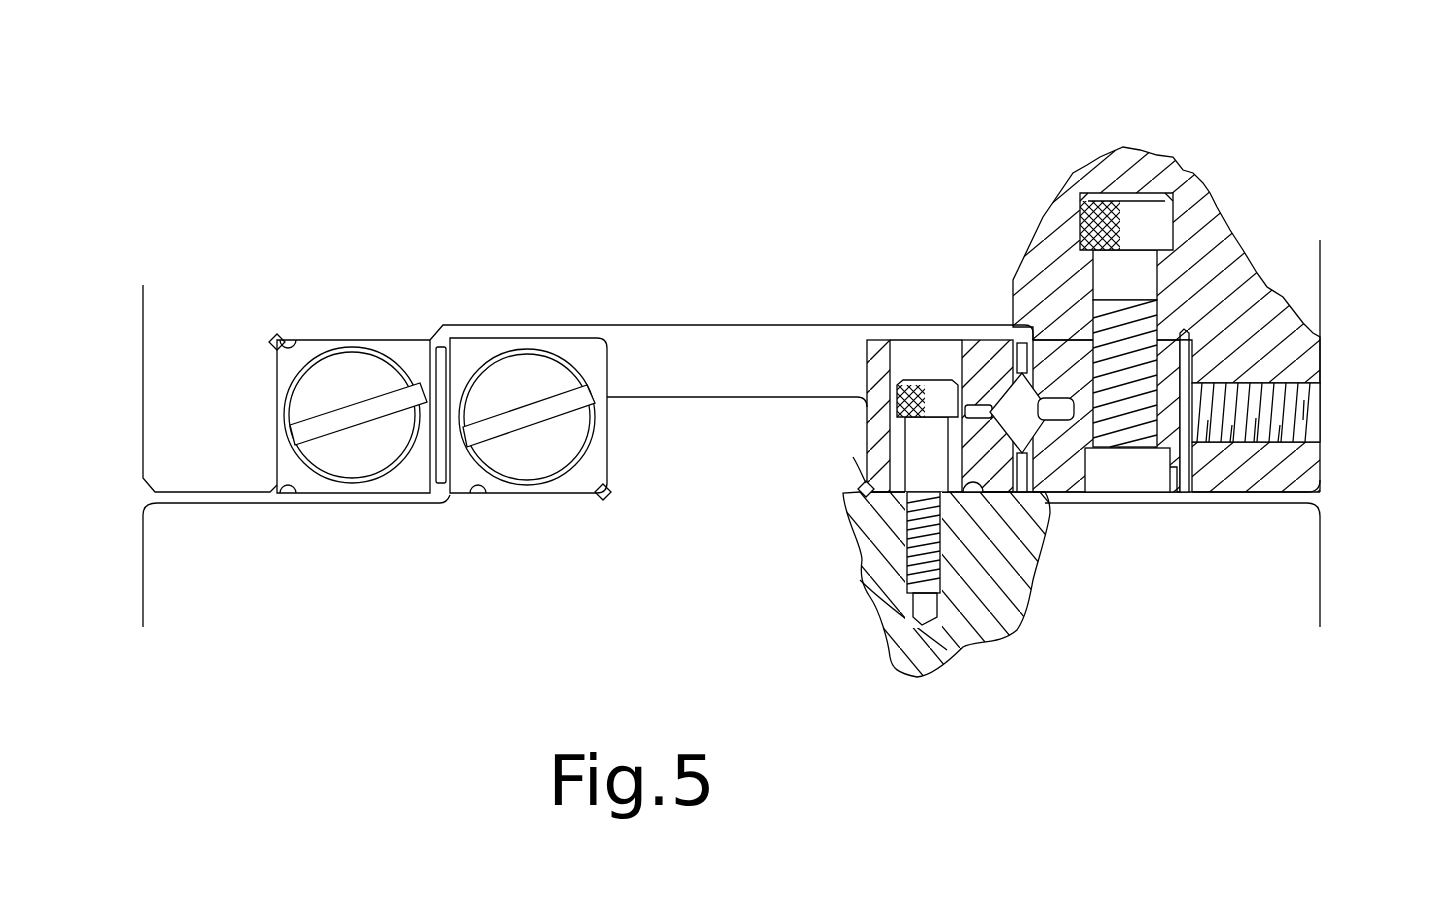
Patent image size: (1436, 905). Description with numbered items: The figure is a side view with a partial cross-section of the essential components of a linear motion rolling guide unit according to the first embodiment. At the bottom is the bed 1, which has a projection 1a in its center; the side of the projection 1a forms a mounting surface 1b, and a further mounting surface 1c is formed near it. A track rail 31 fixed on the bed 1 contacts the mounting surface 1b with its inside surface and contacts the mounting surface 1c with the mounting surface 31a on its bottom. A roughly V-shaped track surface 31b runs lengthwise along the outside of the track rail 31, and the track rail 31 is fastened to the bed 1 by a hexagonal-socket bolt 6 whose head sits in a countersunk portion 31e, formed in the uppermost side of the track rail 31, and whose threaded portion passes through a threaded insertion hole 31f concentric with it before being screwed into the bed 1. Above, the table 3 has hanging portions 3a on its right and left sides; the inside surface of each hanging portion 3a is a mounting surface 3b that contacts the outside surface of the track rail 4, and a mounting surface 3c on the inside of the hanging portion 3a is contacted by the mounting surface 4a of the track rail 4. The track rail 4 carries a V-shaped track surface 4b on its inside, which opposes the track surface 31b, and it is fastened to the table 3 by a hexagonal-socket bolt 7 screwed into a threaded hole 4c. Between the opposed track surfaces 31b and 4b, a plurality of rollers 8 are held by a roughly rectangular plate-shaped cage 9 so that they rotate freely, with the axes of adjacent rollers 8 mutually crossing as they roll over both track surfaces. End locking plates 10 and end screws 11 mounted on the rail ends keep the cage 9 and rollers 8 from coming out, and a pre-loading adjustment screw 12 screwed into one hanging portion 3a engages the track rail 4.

The bed 1 is at (712, 568).
The projection 1a is at (710, 427).
The mounting surface 1b is at (597, 492).
The mounting surface 1c is at (483, 493).
The table 3 is at (757, 300).
The hanging portion 3a is at (178, 403).
The mounting surface 3b is at (297, 490).
The mounting surface 3c is at (255, 358).
The track rail 4 is at (1317, 331).
The mounting surface 4a is at (1078, 330).
The track surface 4b is at (1047, 327).
The threaded hole 4c is at (1138, 403).
The bolt 6 is at (935, 380).
The bolt 7 is at (1152, 220).
The roller 8 is at (418, 357).
The cage 9 is at (442, 350).
The end locking plate 10 is at (320, 347).
The end screw 11 is at (367, 357).
The pre-loading adjustment screw 12 is at (1250, 412).
The track rail 31 is at (870, 358).
The mounting surface 31a is at (977, 490).
The track surface 31b is at (993, 398).
The countersunk portion 31e is at (948, 388).
The threaded insertion hole 31f is at (867, 473).